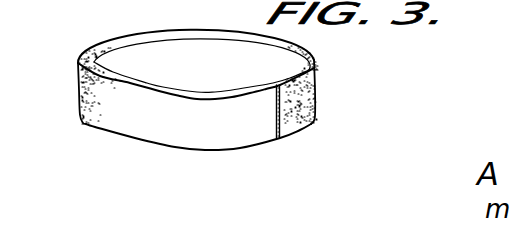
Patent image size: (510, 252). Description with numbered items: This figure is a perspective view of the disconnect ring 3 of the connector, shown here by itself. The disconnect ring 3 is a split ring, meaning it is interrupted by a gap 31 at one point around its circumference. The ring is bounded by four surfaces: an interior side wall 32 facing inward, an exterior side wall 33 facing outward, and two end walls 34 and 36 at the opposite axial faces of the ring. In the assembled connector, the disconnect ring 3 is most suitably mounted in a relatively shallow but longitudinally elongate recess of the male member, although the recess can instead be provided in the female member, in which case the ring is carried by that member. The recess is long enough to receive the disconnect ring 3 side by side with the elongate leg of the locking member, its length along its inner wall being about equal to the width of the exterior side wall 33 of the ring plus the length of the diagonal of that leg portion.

The disconnect ring 3 is at (170, 94).
The gap 31 is at (278, 138).
The interior side wall 32 is at (218, 48).
The exterior side wall 33 is at (138, 127).
The end wall 34 is at (85, 64).
The end wall 36 is at (92, 126).